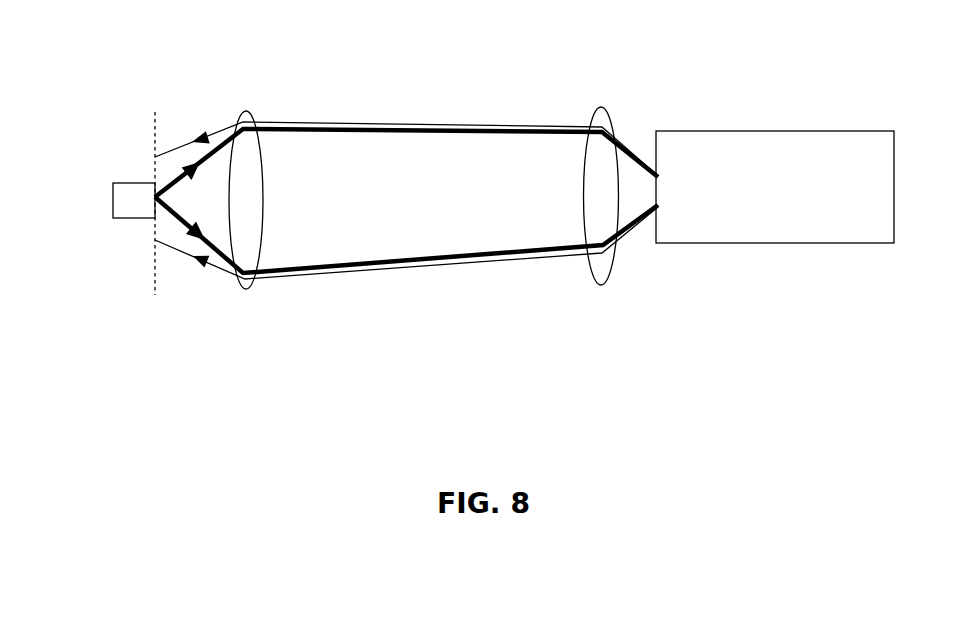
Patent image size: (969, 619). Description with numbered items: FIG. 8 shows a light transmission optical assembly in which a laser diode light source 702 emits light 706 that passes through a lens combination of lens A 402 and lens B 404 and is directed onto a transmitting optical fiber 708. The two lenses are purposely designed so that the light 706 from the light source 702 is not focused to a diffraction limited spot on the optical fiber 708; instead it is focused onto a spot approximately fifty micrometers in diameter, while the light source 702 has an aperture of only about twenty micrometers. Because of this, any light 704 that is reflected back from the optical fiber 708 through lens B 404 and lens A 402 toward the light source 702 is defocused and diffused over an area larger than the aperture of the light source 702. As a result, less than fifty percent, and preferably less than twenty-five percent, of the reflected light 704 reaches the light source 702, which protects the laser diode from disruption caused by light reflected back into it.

The lens A 402 is at (254, 147).
The lens B 404 is at (585, 142).
The light source 702 is at (128, 205).
The light reflected from the optical fiber 704 is at (198, 138).
The light from the light source 706 is at (172, 213).
The optical fiber 708 is at (693, 163).